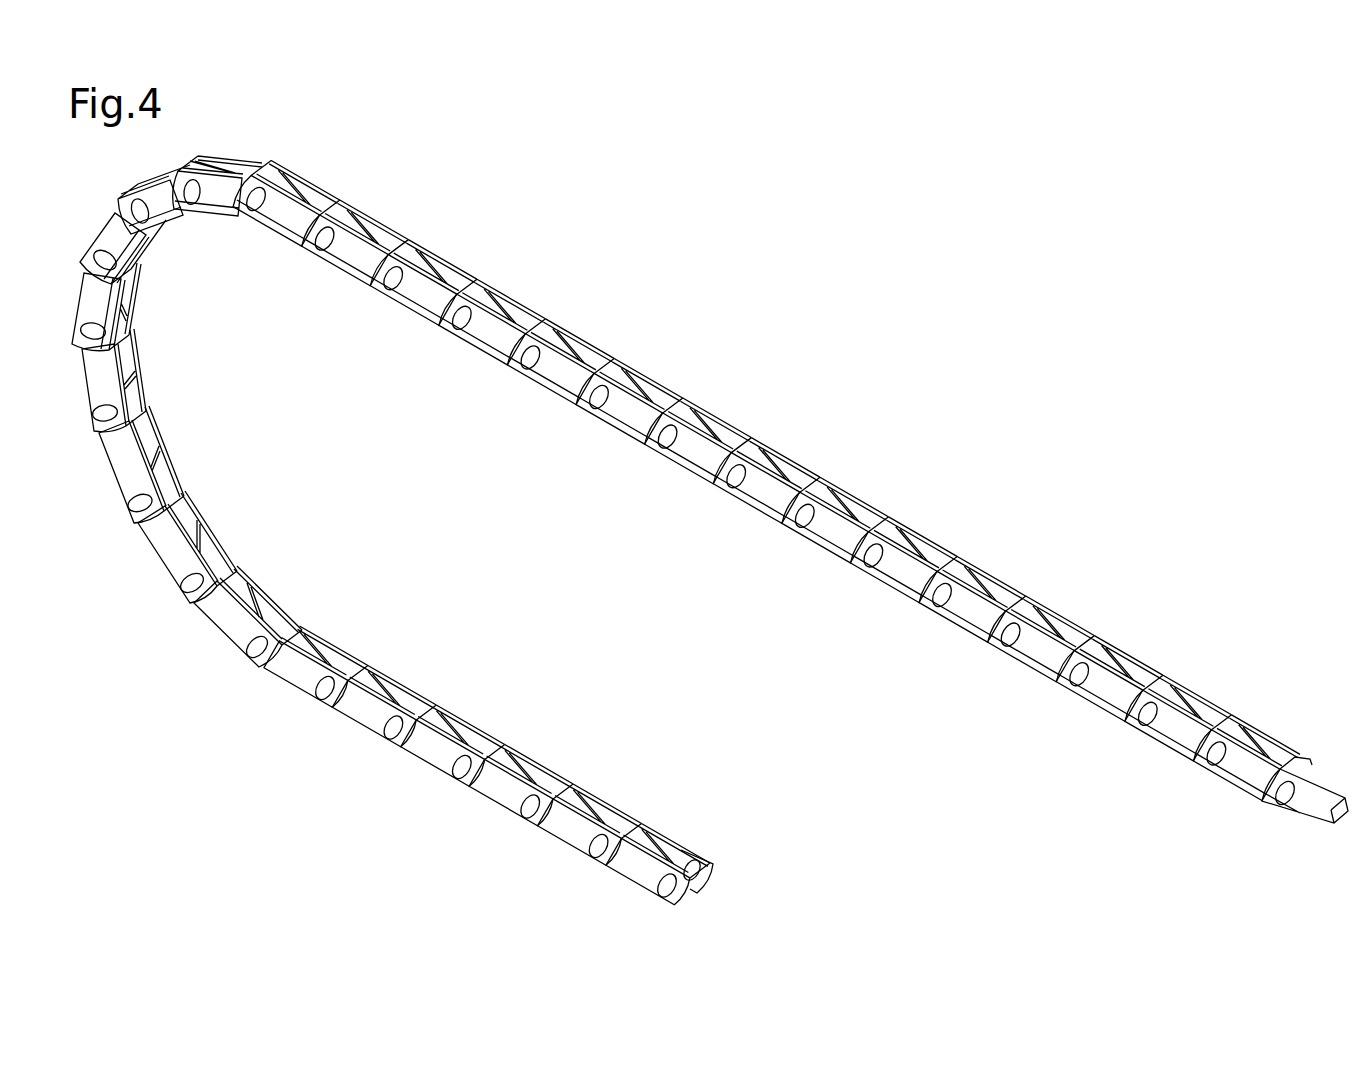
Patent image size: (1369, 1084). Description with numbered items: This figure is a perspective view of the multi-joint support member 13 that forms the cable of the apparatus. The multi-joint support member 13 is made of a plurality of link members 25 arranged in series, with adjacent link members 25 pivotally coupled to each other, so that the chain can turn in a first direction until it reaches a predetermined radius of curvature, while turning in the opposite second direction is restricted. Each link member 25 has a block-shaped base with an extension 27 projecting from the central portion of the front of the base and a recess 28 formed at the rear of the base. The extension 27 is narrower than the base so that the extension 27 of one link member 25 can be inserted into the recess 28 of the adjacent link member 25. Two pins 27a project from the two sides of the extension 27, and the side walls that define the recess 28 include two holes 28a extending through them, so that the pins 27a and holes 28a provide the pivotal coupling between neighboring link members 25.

The multi-joint support member 13 is at (928, 433).
The link member 25 is at (418, 316).
The extension 27 is at (1330, 784).
The pin 27a is at (1283, 806).
The recess 28 is at (685, 851).
The hole 28a is at (660, 896).